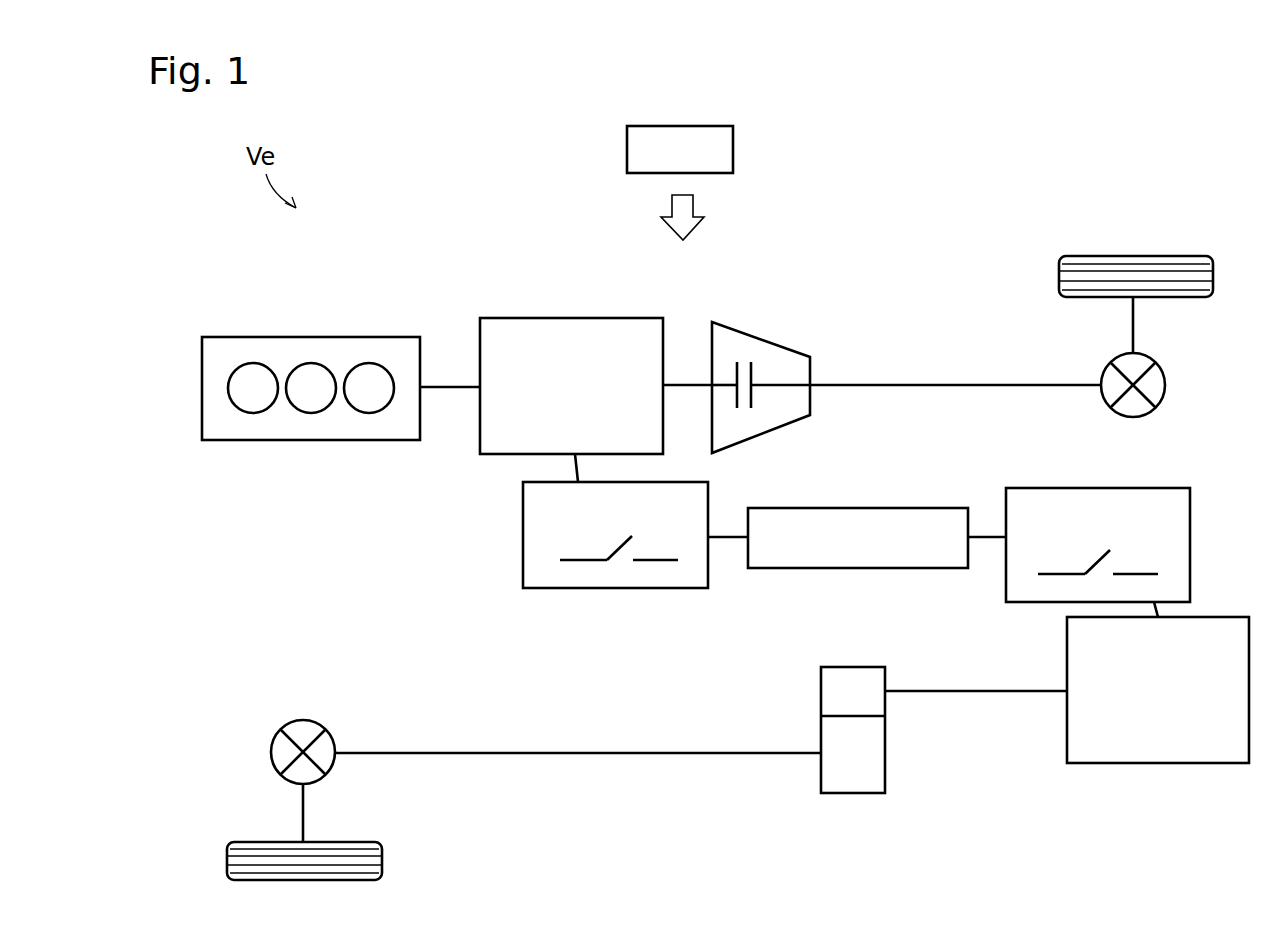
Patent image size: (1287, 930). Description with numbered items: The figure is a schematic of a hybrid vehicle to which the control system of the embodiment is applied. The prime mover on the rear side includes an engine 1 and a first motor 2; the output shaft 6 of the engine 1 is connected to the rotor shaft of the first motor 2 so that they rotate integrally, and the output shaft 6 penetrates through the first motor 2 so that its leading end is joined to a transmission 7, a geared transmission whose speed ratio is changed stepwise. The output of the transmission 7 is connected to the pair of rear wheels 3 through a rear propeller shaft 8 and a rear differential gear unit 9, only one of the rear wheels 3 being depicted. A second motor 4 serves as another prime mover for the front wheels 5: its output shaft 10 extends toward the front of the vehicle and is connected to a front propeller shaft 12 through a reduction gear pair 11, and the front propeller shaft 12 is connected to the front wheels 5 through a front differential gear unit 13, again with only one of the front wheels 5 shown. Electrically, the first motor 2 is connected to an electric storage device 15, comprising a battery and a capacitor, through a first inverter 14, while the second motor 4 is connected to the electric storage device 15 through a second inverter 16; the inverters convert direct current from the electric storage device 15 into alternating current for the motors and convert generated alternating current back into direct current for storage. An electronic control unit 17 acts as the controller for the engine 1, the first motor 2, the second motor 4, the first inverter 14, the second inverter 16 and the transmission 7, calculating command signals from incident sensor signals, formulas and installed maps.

The engine 1 is at (320, 337).
The first motor 2 is at (573, 318).
The rear wheels 3 is at (1133, 256).
The second motor 4 is at (1157, 763).
The front wheels 5 is at (382, 860).
The output shaft 6 is at (447, 389).
The transmission 7 is at (758, 337).
The rear propeller shaft 8 is at (947, 383).
The rear differential gear unit 9 is at (1165, 386).
The output shaft 10 is at (975, 692).
The reduction gear pair 11 is at (857, 824).
The front propeller shaft 12 is at (611, 755).
The front differential gear unit 13 is at (292, 721).
The first inverter 14 is at (614, 588).
The electric storage device 15 is at (866, 508).
The second inverter 16 is at (1090, 488).
The electronic control unit 17 is at (733, 150).